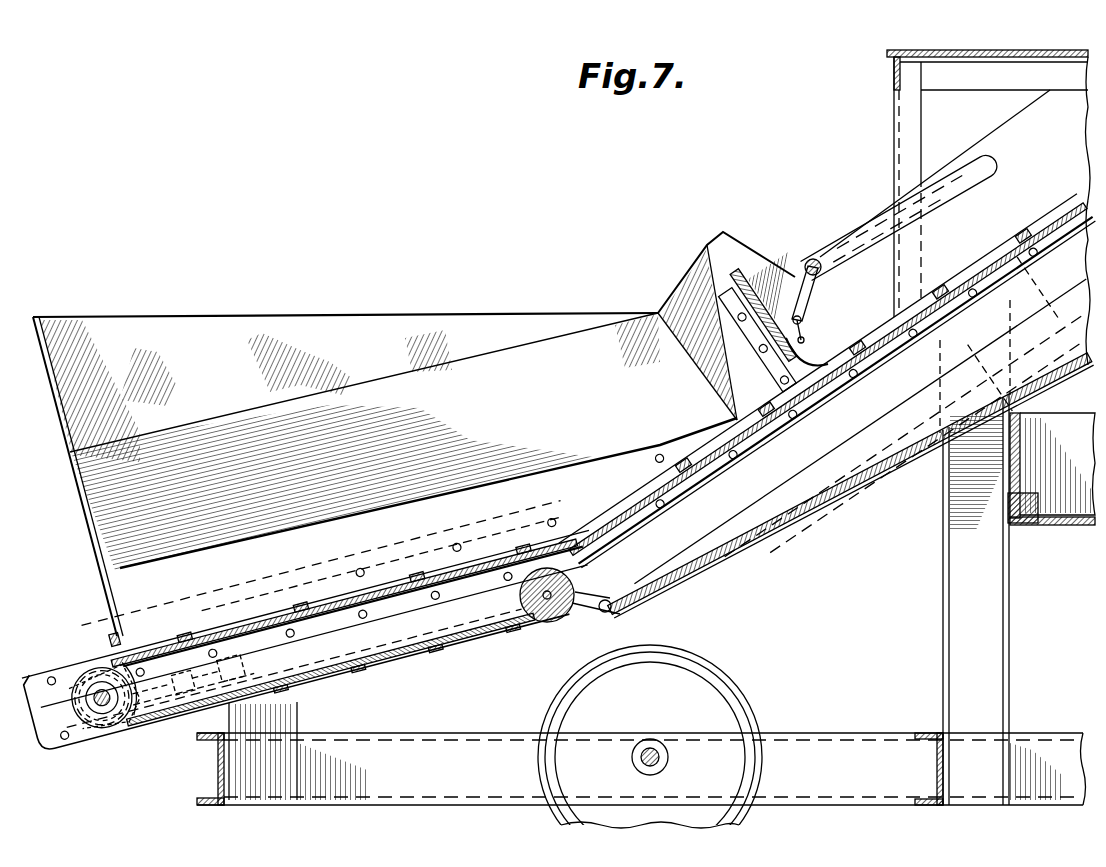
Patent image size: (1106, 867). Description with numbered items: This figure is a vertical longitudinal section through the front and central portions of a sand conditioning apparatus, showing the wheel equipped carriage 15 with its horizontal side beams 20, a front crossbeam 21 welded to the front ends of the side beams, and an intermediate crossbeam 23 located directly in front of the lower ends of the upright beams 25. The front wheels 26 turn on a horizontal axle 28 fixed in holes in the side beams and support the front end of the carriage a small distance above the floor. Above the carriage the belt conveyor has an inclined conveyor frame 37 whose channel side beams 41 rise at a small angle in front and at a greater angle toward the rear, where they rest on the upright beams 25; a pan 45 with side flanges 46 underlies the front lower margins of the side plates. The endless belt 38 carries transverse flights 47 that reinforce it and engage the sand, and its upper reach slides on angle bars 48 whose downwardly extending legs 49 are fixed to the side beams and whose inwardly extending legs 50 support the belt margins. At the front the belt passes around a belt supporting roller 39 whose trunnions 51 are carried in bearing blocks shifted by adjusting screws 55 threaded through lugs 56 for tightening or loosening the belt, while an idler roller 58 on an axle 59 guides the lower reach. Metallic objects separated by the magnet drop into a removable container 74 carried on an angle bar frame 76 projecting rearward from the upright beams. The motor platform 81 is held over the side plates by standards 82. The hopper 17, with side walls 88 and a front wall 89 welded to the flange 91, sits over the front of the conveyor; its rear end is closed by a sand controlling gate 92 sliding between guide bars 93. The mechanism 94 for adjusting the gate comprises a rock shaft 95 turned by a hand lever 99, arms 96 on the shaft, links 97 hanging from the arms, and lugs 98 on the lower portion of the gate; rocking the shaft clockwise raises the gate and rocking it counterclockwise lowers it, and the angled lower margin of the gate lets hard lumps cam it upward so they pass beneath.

The wheel equipped carriage 15 is at (378, 725).
The sand receiving hopper 17 is at (245, 311).
The side beams 20 is at (437, 734).
The front crossbeam 21 is at (218, 770).
The intermediate crossbeam 23 is at (936, 770).
The upright beams 25 is at (1009, 630).
The front wheels 26 is at (740, 690).
The axle 28 is at (668, 757).
The conveyor frame 37 is at (393, 650).
The endless belt 38 is at (370, 568).
The belt supporting roller 39 is at (102, 730).
The side beams 41 is at (1028, 300).
The pan 45 is at (838, 493).
The side flanges 46 is at (916, 435).
The flights 47 is at (403, 590).
The angle bars 48 is at (705, 495).
The downwardly extending legs 49 is at (450, 594).
The inwardly extending legs 50 is at (345, 616).
The trunnions 51 is at (112, 718).
The adjusting screws 55 is at (238, 676).
The lugs 56 is at (194, 688).
The idler roller 58 is at (604, 607).
The axle 59 is at (523, 624).
The removable container 74 is at (1057, 512).
The angle bar frame 76 is at (1018, 532).
The platform 81 is at (962, 57).
The standards 82 is at (912, 128).
The side walls 88 is at (352, 318).
The front wall 89 is at (68, 440).
The flange 91 is at (112, 638).
The sand controlling gate 92 is at (742, 298).
The guide bars 93 is at (758, 312).
The manually manipulable mechanism 94 is at (826, 257).
The rock shaft 95 is at (901, 215).
The arms 96 is at (814, 291).
The links 97 is at (805, 320).
The lugs 98 is at (806, 348).
The hand lever 99 is at (955, 204).